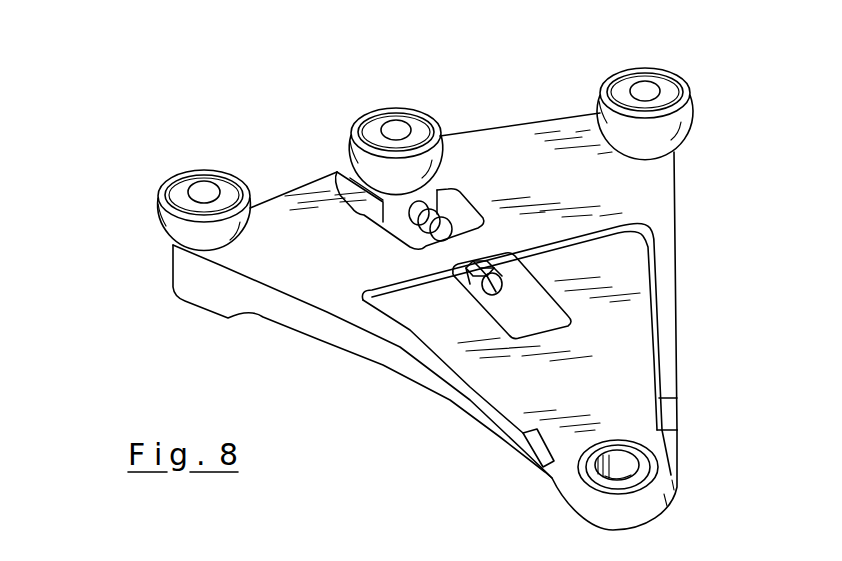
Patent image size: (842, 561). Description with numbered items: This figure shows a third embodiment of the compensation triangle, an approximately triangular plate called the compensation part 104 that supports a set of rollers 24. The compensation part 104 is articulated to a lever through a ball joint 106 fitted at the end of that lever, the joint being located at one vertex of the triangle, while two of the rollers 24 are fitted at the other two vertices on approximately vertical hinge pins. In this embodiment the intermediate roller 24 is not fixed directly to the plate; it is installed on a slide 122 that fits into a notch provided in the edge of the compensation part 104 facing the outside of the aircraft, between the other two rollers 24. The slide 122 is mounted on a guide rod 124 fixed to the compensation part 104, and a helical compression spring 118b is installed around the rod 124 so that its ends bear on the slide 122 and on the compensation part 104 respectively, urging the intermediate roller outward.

The roller 24 is at (158, 212).
The compensation part 104 is at (622, 343).
The ball joint 106 is at (588, 472).
The helical compression spring 118b is at (460, 192).
The slide 122 is at (353, 181).
The guide rod 124 is at (403, 245).